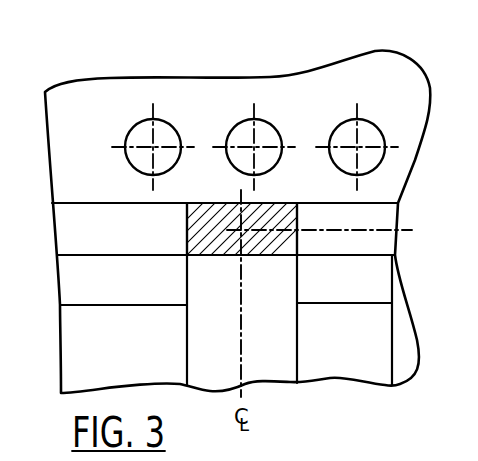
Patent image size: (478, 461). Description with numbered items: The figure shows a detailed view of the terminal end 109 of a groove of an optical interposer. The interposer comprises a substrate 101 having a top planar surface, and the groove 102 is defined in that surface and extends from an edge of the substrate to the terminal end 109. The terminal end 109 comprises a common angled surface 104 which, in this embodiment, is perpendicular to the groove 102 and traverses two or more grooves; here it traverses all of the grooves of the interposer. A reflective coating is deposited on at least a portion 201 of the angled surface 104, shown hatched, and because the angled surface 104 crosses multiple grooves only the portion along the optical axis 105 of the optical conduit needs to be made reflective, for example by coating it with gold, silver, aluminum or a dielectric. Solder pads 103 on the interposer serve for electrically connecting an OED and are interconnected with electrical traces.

The terminal end 109 is at (212, 60).
The solder pads 103 is at (143, 136).
The portion of the angled surface 201 is at (278, 208).
The common angled surface 104 is at (383, 215).
The substrate 101 is at (58, 378).
The groove 102 is at (215, 365).
The optical axis 105 is at (242, 337).